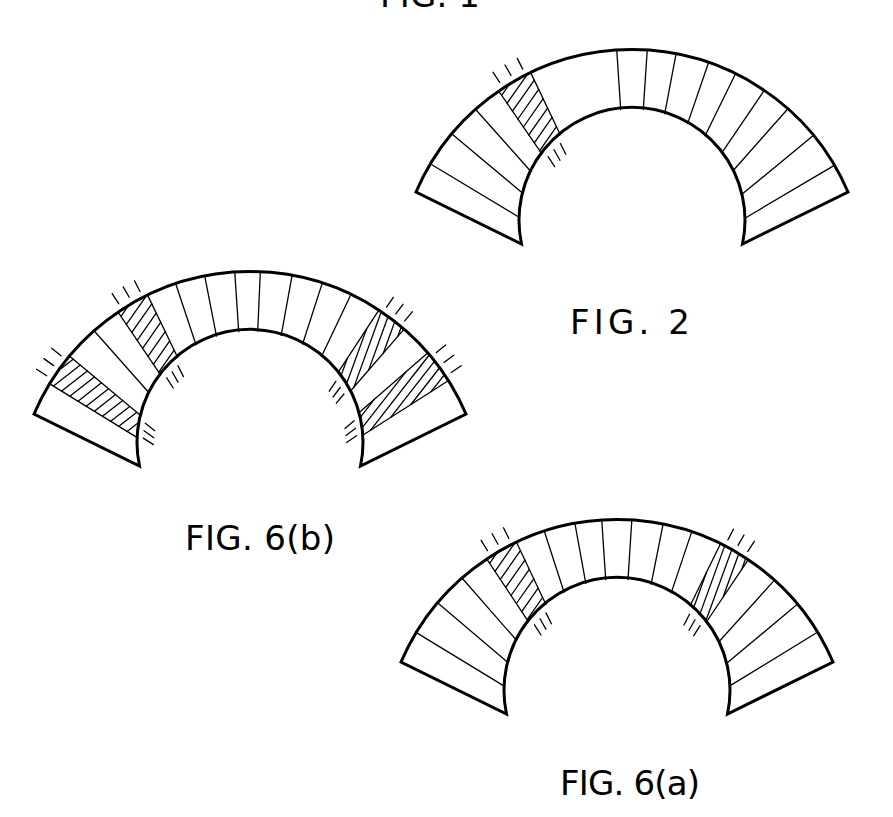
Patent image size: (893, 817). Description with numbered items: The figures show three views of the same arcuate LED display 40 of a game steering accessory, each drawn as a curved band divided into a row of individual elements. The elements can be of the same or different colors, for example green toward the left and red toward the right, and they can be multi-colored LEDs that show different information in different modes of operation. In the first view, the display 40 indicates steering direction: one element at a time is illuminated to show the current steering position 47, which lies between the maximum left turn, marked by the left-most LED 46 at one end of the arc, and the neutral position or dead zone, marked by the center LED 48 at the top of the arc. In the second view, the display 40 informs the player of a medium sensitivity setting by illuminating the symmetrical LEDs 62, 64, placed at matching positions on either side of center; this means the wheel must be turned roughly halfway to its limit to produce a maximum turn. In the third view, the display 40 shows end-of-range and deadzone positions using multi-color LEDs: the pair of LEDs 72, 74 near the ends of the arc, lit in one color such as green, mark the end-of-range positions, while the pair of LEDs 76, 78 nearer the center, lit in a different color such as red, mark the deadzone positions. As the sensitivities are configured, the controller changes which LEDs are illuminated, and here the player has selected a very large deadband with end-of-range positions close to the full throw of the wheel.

In FIG. 2, the LED display 40 is at (758, 70).
In FIG. 6B, the LED display 40 is at (310, 265).
In FIG. 6A, the LED display 40 is at (650, 503).
In FIG. 2, the left-most LED 46 is at (437, 182).
In FIG. 2, the current steering position 47 is at (538, 100).
In FIG. 2, the center LED 48 is at (632, 70).
In FIG. 6A, the symmetrical LED 62 is at (523, 570).
In FIG. 6A, the symmetrical LED 64 is at (728, 562).
In FIG. 6B, the end-of-range LED 72 is at (137, 427).
In FIG. 6B, the end-of-range LED 74 is at (357, 433).
In FIG. 6B, the deadzone LED 76 is at (153, 320).
In FIG. 6B, the deadzone LED 78 is at (383, 333).